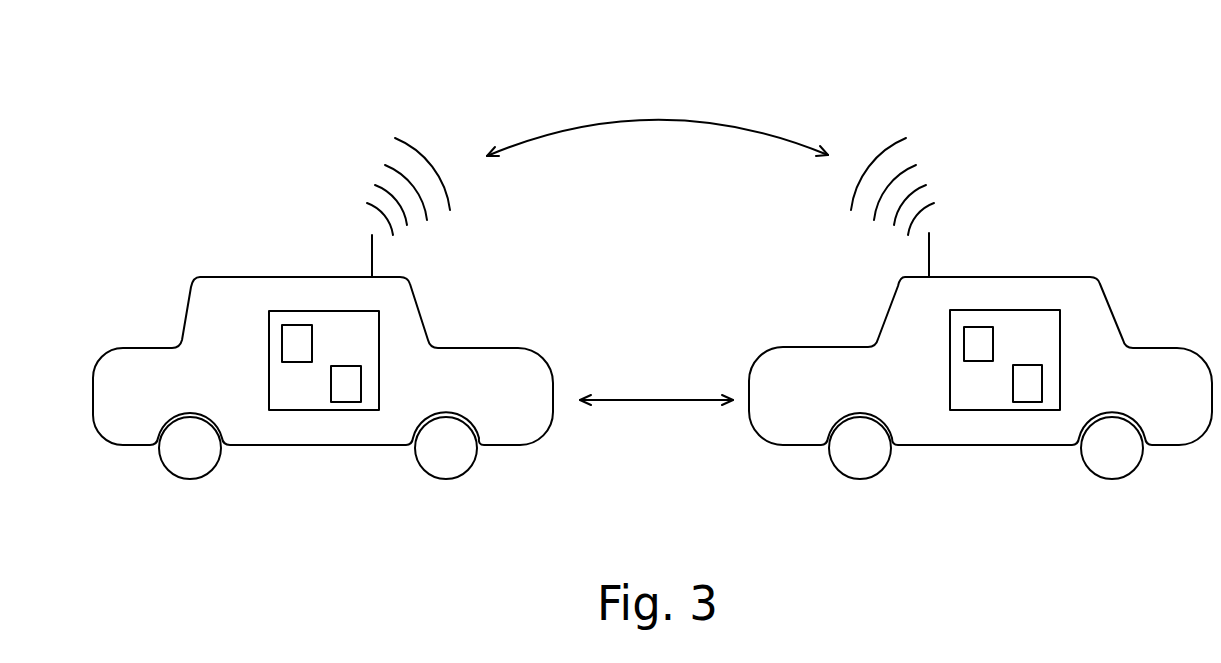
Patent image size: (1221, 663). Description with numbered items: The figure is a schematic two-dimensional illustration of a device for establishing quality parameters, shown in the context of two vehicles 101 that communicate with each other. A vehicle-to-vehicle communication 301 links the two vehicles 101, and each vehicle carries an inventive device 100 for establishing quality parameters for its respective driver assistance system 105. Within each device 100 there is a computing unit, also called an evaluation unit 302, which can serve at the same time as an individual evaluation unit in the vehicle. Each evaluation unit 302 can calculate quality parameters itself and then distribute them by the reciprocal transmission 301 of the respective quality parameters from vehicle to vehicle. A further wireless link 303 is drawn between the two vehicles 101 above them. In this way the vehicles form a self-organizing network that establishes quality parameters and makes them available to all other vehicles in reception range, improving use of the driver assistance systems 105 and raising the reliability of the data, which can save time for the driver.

The vehicle 101 is at (283, 445).
The device for establishing quality parameters 100 is at (330, 311).
The driver assistance system 105 is at (291, 325).
The computing unit (evaluation unit) 302 is at (343, 402).
The vehicle-to-vehicle communication 301 is at (657, 401).
The wireless communication link 303 is at (652, 118).